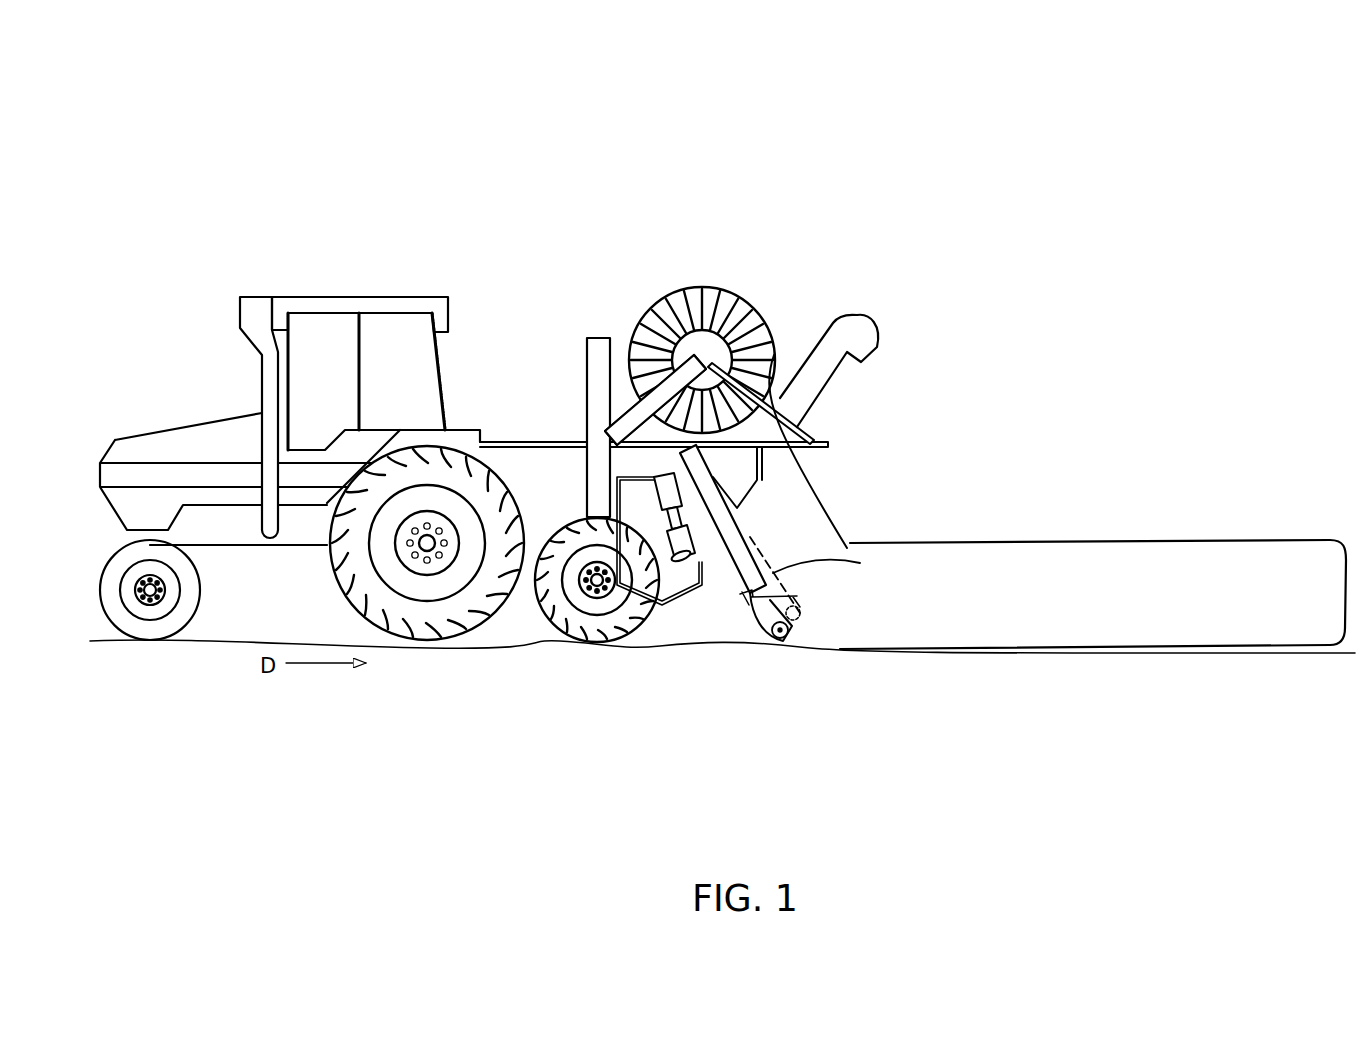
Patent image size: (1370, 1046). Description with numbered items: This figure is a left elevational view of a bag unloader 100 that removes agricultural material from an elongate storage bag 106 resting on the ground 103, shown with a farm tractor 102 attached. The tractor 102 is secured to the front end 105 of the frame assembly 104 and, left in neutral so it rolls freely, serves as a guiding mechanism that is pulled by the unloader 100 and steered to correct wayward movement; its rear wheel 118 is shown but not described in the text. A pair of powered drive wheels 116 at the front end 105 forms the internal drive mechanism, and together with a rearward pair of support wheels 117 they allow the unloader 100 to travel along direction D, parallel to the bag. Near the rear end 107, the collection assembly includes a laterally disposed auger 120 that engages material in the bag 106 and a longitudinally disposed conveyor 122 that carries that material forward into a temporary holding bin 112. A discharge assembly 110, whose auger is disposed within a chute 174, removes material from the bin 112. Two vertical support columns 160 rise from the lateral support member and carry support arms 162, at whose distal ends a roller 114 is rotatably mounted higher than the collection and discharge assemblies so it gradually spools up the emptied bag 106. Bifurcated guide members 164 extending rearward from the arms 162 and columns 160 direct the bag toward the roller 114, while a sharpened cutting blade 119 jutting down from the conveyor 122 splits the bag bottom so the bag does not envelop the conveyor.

The unloader 100 is at (623, 162).
The farm tractor 102 is at (338, 296).
The ground 103 is at (545, 681).
The frame assembly 104 is at (719, 479).
The front end 105 is at (571, 467).
The storage bag 106 is at (1125, 555).
The rear end 107 is at (903, 487).
The discharge assembly 110 is at (880, 366).
The holding bin 112 is at (672, 582).
The roller 114 is at (681, 294).
The drive wheels 116 is at (618, 645).
The support wheels 117 is at (790, 641).
The tractor rear wheel 118 is at (447, 643).
The cutting blade 119 is at (750, 592).
The auger 120 is at (818, 608).
The conveyor 122 is at (845, 562).
The vertical support columns 160 is at (592, 330).
The support arms 162 is at (612, 416).
The guide members 164 is at (806, 432).
The chute 174 is at (845, 320).